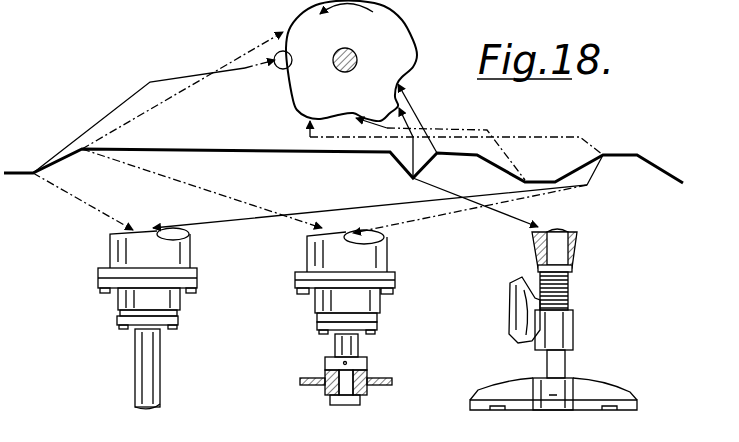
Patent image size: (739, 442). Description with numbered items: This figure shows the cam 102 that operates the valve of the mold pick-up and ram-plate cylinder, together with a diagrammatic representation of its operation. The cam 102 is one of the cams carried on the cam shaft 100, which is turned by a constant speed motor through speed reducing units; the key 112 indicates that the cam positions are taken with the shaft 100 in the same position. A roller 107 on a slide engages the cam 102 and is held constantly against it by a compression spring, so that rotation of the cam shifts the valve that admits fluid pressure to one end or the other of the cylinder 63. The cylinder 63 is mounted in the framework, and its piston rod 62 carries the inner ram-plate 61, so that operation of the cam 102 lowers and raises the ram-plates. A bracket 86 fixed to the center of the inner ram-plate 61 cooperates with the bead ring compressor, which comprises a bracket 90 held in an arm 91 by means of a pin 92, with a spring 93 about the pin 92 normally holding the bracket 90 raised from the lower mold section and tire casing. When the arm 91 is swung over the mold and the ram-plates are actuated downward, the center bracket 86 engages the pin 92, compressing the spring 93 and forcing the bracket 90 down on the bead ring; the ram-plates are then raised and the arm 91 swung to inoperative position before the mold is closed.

The cam 102 is at (388, 35).
The key 112 is at (344, 49).
The cam shaft 100 is at (343, 72).
The roller 107 is at (283, 69).
The cylinder 63 is at (160, 256).
The piston rod 62 is at (145, 348).
The inner ram-plate 61 is at (372, 372).
The bracket 86 is at (575, 260).
The spring 93 is at (568, 293).
The arm 91 is at (513, 333).
The pin 92 is at (565, 358).
The bracket 90 is at (595, 388).